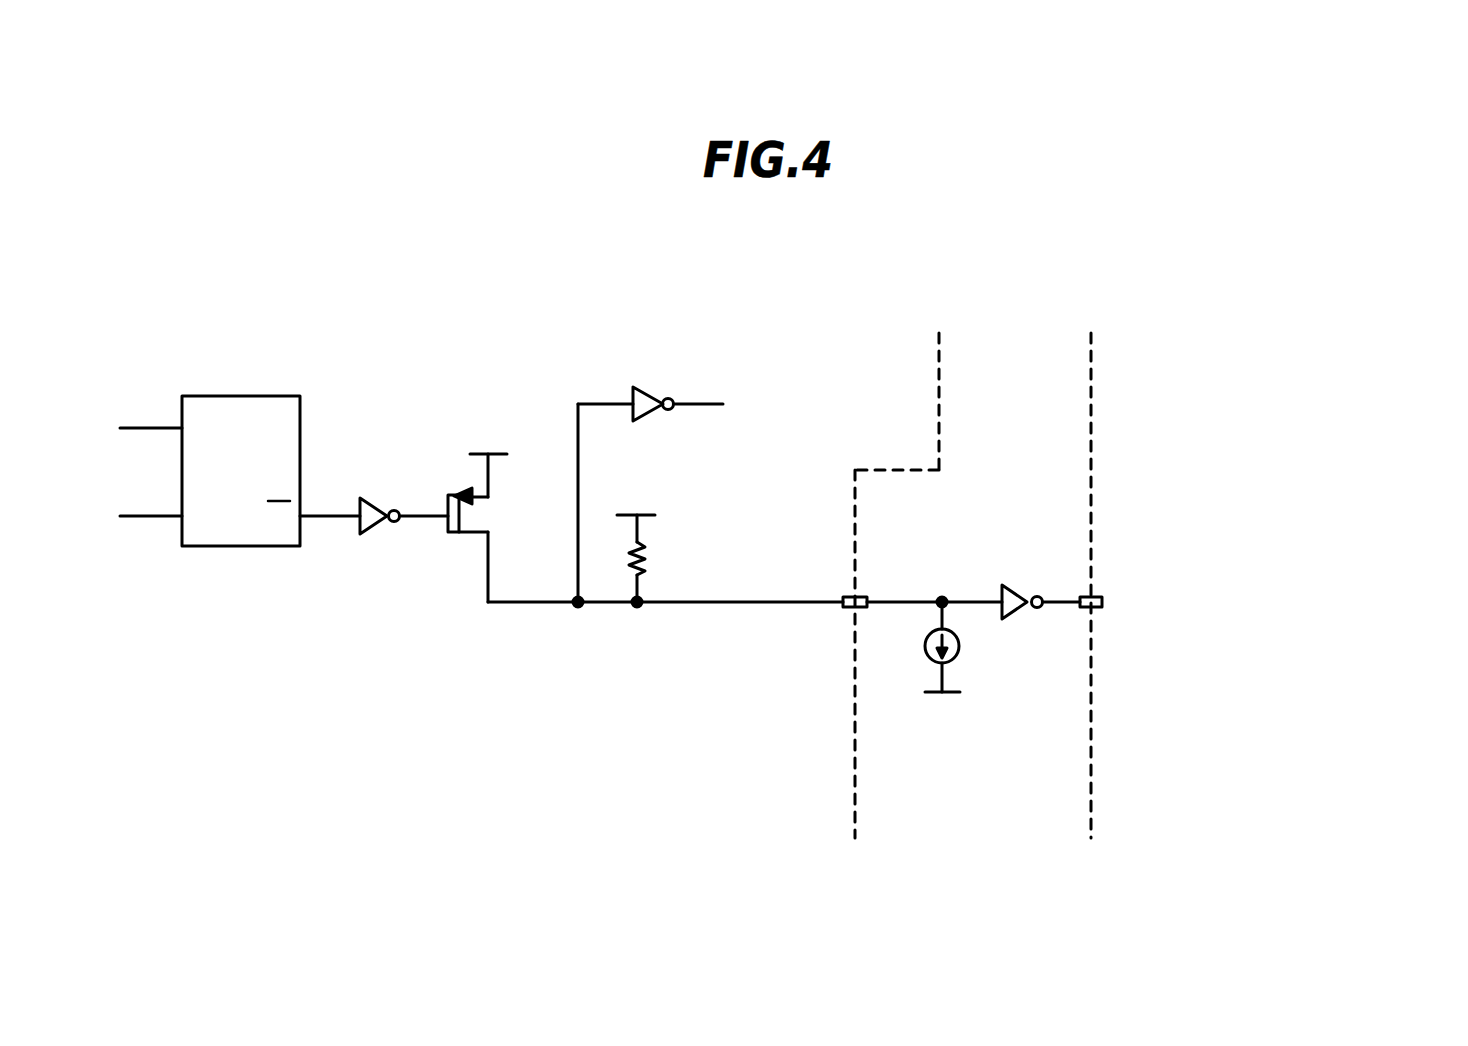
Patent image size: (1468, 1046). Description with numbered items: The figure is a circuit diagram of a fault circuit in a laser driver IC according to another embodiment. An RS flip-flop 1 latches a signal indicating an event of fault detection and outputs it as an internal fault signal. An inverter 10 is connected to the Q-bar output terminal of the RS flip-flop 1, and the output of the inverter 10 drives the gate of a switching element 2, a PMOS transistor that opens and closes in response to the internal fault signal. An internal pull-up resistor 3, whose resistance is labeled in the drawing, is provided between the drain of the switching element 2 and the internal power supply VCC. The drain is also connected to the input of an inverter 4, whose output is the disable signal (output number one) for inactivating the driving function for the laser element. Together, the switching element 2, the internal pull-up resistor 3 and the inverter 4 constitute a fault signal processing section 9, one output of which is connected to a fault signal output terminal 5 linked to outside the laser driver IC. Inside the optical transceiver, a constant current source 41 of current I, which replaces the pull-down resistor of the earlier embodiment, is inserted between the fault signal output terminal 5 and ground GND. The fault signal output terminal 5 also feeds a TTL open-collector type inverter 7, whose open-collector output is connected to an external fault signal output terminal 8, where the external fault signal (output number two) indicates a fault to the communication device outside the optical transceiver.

The RS flip-flop 1 is at (238, 548).
The switching element 2 is at (447, 497).
The internal pull-up resistor 3 is at (645, 565).
The inverter 4 is at (652, 388).
The fault signal output terminal 5 is at (838, 607).
The inverter 7 is at (1013, 585).
The external fault signal output terminal 8 is at (1097, 595).
The fault signal processing section 9 is at (281, 332).
The inverter 10 is at (372, 530).
The constant current source 41 is at (960, 642).